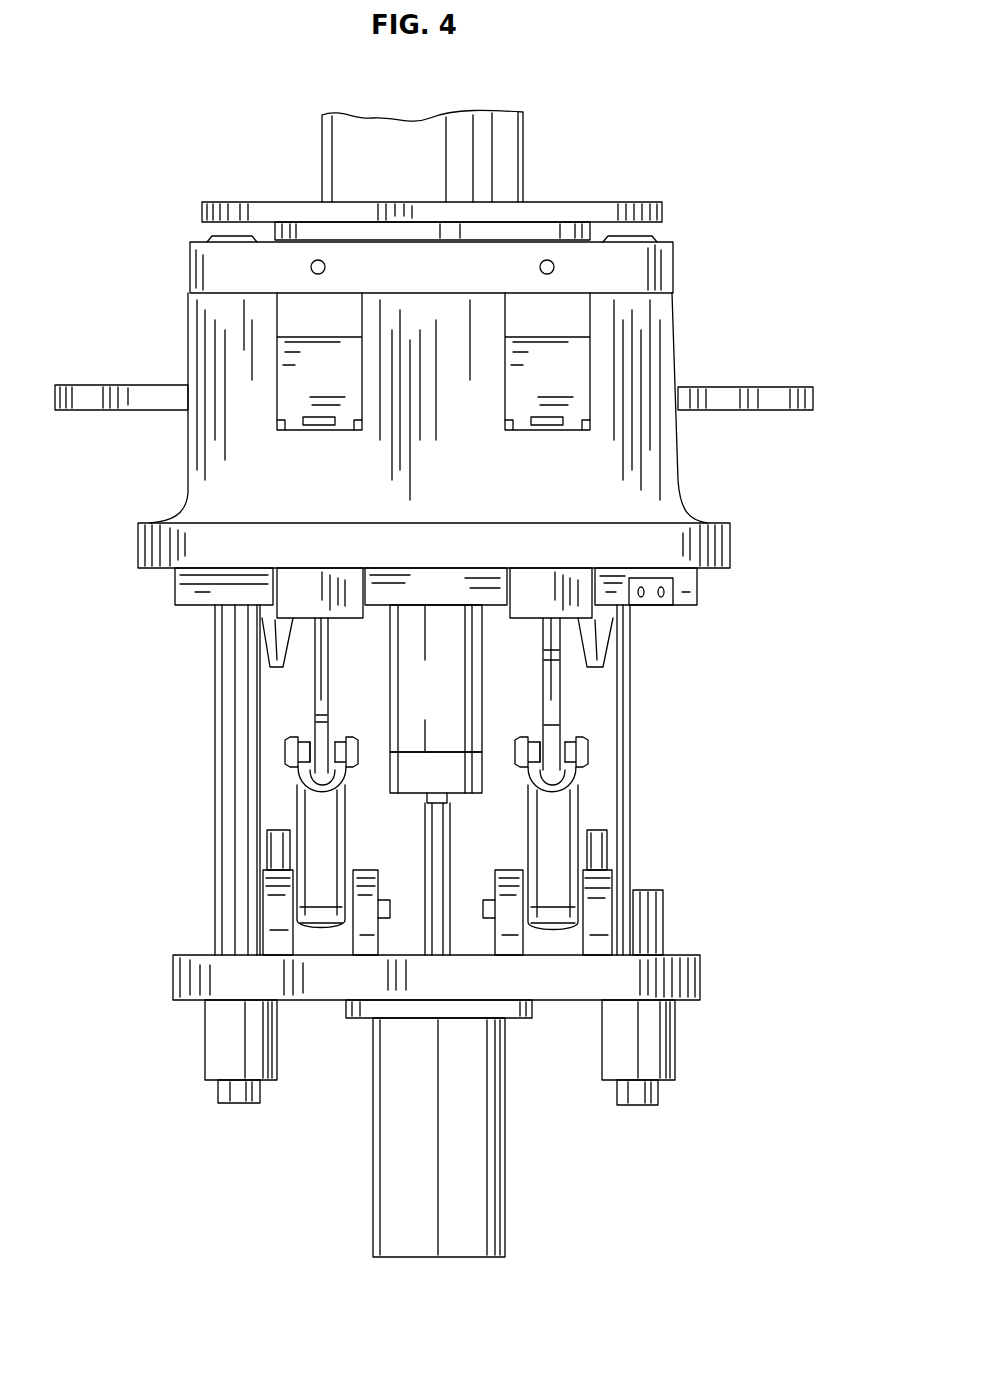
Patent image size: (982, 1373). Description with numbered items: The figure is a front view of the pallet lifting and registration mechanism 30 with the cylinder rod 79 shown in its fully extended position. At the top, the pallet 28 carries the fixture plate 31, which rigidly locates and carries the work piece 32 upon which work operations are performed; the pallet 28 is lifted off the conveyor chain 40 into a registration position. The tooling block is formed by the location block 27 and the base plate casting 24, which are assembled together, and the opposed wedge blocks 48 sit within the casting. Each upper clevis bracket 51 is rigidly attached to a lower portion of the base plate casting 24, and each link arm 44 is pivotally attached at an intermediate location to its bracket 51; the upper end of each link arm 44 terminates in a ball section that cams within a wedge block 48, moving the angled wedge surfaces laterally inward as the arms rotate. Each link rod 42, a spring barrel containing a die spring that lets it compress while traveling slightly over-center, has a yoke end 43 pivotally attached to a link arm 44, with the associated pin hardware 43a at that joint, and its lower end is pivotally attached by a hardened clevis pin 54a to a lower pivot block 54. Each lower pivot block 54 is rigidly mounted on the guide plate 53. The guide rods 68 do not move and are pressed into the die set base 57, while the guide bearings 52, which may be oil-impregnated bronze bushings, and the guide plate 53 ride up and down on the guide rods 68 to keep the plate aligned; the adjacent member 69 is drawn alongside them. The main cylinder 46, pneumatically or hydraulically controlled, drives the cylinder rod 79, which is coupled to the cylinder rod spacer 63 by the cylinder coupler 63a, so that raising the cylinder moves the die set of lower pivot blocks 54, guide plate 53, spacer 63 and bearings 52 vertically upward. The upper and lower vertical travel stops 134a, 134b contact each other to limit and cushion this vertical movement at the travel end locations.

The base plate casting 24 is at (650, 340).
The location block 27 is at (660, 268).
The pallet 28 is at (590, 232).
The mechanism 30 is at (737, 632).
The fixture plate 31 is at (622, 204).
The work piece 32 is at (380, 186).
The conveyor chain 40 is at (770, 411).
The link rod 42 is at (555, 848).
The yoke end 43 is at (565, 787).
The clevis pin nut 43a is at (287, 753).
The link arm 44 is at (557, 705).
The main cylinder 46 is at (450, 1168).
The wedge block 48 is at (338, 394).
The upper clevis bracket 51 is at (290, 610).
The guide bearing 52 is at (228, 1040).
The guide plate 53 is at (683, 978).
The lower pivot block 54 is at (370, 905).
The clevis pin 54a is at (487, 920).
The die set base 57 is at (418, 608).
The cylinder rod spacer 63 is at (403, 706).
The cylinder coupler 63a is at (400, 790).
The guide rod 68 is at (223, 717).
The column 69 is at (625, 663).
The cylinder rod 79 is at (435, 840).
The upper vertical travel stop 134a is at (275, 637).
The lower vertical travel stop 134b is at (598, 858).